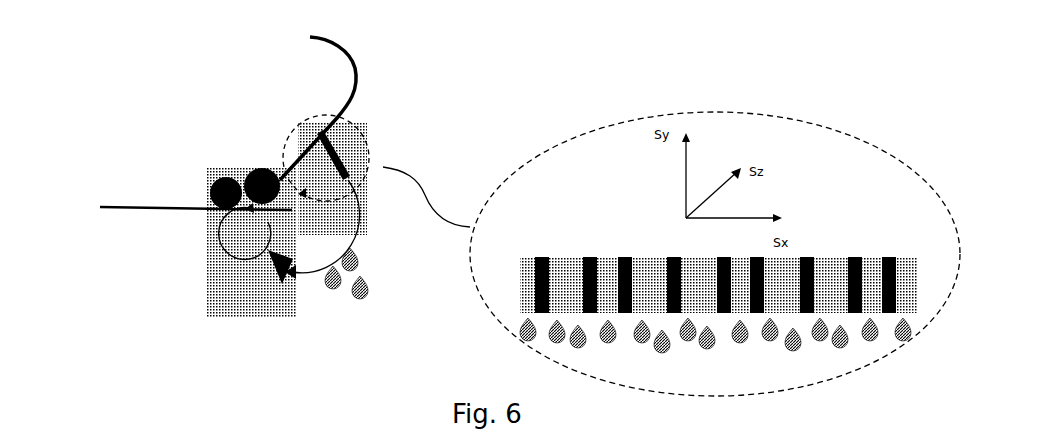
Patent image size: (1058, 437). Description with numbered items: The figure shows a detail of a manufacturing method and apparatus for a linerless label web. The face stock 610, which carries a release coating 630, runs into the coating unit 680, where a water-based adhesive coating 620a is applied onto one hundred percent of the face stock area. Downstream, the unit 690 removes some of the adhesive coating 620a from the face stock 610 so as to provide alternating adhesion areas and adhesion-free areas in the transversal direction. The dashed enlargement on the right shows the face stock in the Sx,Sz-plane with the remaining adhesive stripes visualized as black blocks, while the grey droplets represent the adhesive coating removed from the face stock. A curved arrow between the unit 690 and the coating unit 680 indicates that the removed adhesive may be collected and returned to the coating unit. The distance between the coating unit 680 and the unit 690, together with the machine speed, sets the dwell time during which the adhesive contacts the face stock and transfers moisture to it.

The face stock 610 is at (174, 247).
The release coating 630 is at (115, 211).
The water-based adhesive coating 620a is at (623, 257).
The coating unit 680 is at (263, 304).
The unit 690 is at (346, 225).